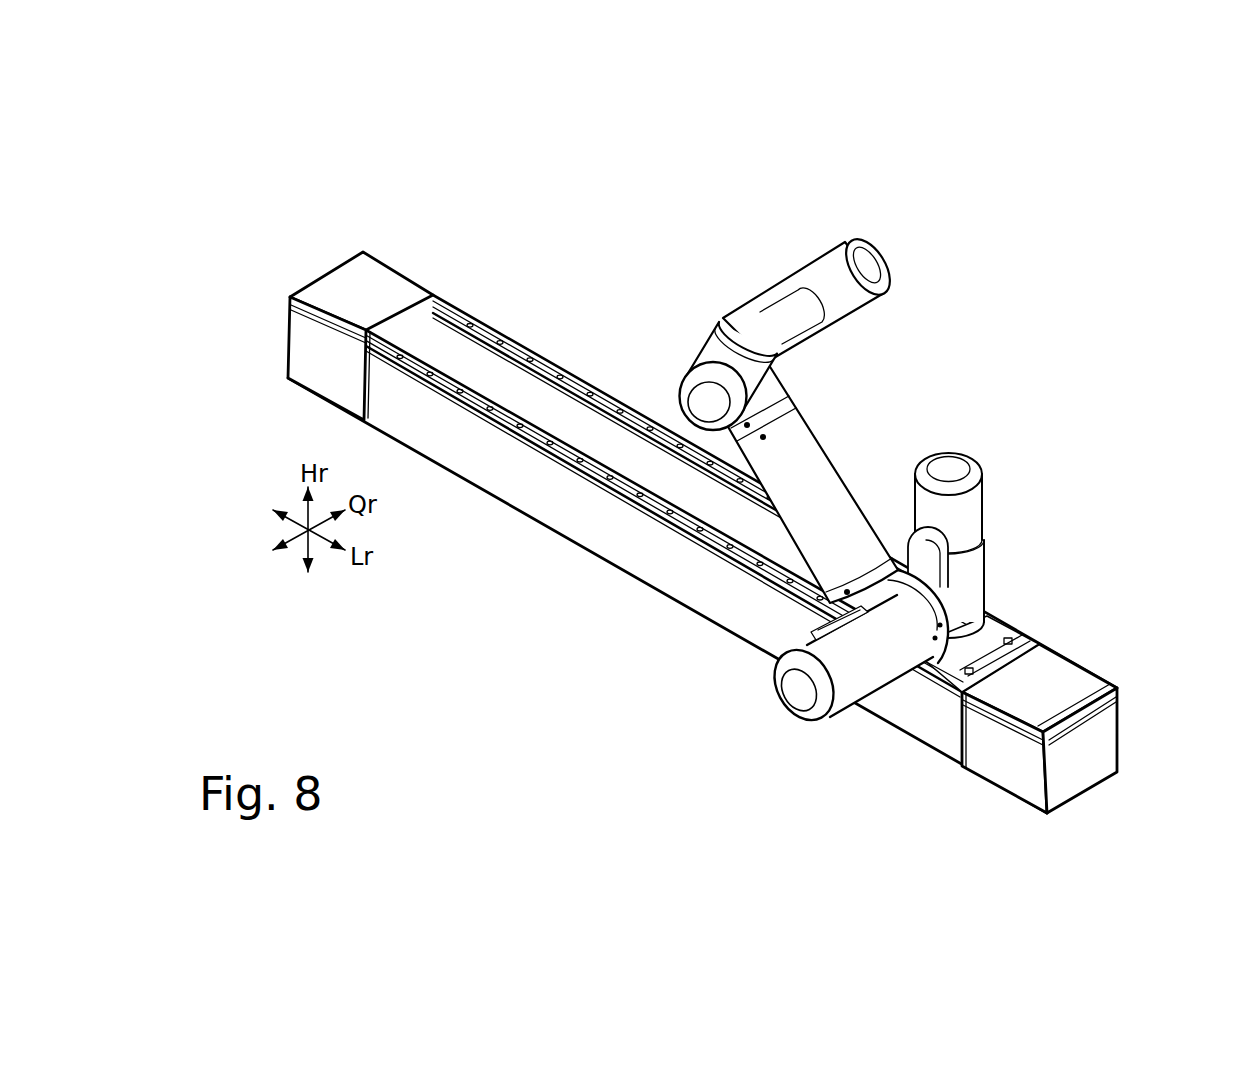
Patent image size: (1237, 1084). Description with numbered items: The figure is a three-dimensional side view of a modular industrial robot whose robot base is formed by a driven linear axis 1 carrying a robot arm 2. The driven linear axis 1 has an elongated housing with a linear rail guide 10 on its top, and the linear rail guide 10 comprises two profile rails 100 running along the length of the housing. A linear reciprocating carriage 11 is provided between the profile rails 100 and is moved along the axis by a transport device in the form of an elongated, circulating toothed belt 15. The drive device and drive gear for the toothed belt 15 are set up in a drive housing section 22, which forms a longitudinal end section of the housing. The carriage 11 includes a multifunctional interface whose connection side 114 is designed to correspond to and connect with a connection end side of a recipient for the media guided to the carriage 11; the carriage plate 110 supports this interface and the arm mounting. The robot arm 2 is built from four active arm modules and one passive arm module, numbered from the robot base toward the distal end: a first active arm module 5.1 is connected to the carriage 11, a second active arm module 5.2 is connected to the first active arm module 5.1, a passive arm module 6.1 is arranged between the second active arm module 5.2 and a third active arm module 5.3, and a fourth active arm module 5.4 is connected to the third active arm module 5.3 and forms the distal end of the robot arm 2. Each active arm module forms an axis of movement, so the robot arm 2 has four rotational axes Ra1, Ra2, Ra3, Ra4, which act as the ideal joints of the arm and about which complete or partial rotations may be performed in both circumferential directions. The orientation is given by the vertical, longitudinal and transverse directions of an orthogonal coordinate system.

The driven linear axis 1 is at (738, 482).
The robot arm 2 is at (863, 515).
The linear rail guide 10 is at (741, 466).
The profile rails 100 is at (545, 357).
The toothed belt 15 is at (608, 442).
The drive housing section 22 is at (338, 275).
The carriage 11 is at (966, 688).
The carriage plate 110 is at (966, 709).
The connection side 114 is at (1008, 636).
The first active arm module 5.1 is at (995, 638).
The second active arm module 5.2 is at (799, 673).
The third active arm module 5.3 is at (758, 306).
The fourth active arm module 5.4 is at (798, 310).
The passive arm module 6.1 is at (832, 502).
The rotational axis Ra1 is at (968, 580).
The rotational axis Ra2 is at (769, 733).
The rotational axis Ra3 is at (730, 338).
The rotational axis Ra4 is at (767, 302).